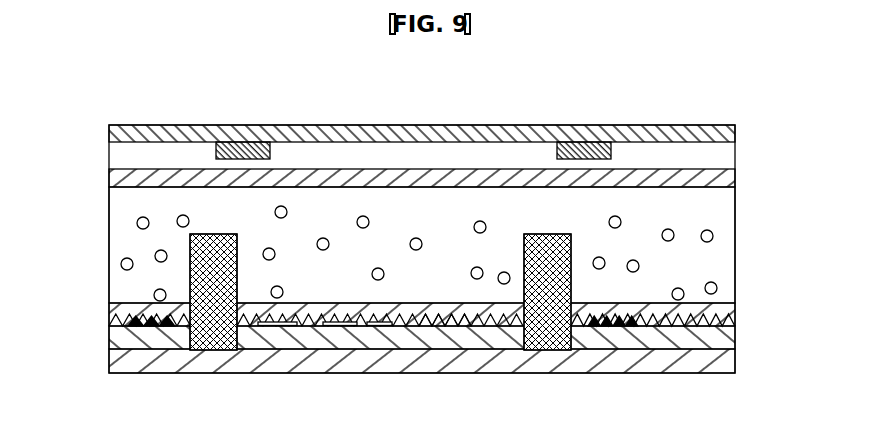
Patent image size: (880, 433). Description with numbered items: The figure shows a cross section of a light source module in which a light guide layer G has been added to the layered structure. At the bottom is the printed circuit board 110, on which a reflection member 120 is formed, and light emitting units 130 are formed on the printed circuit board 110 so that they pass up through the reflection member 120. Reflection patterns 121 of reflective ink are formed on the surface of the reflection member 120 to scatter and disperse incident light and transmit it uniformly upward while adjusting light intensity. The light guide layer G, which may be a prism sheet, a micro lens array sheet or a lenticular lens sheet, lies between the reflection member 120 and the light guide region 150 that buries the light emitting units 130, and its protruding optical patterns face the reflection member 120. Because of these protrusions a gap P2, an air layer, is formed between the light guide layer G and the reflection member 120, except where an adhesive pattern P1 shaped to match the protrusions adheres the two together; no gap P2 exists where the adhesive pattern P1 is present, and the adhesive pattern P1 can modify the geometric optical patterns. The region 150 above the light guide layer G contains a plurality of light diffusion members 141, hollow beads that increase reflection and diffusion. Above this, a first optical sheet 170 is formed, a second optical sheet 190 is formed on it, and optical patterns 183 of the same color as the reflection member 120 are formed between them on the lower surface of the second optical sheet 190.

The printed circuit board 110 is at (722, 363).
The reflection member 120 is at (724, 337).
The reflection pattern 121 is at (273, 326).
The light emitting unit 130 is at (190, 276).
The light diffusion member 141 is at (137, 224).
The filling layer / gap 150 is at (722, 248).
The first optical sheet 170 is at (692, 182).
The optical pattern 183 is at (248, 140).
The second optical sheet 190 is at (727, 133).
The light guide layer G is at (725, 306).
The adhesive pattern P1 is at (124, 314).
The gap P2 is at (377, 326).